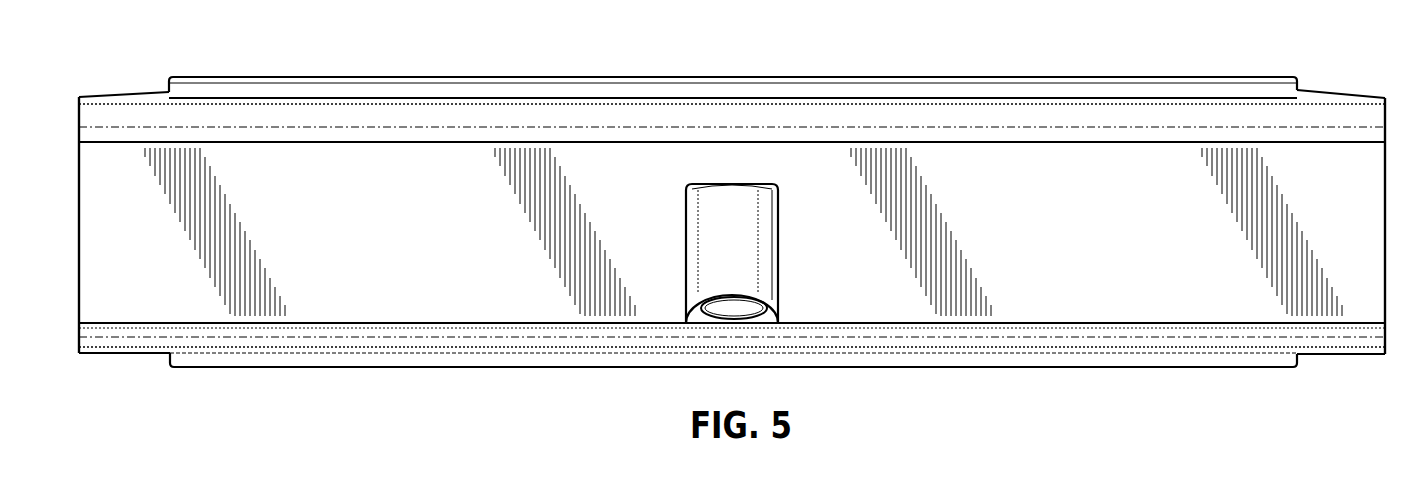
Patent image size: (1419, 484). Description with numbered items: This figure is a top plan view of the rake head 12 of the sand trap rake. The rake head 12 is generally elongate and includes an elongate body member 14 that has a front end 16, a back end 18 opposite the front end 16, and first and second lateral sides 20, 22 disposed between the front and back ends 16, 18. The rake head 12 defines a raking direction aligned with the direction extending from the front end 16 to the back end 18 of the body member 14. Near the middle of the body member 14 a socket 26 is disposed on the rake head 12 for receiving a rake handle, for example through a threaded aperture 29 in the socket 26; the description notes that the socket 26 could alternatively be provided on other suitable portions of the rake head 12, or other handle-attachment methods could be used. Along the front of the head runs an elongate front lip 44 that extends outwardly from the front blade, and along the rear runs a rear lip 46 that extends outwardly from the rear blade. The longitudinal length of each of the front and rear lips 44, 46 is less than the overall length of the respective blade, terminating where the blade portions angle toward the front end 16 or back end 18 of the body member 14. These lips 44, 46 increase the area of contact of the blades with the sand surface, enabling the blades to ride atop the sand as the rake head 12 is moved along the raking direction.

The rake head 12 is at (537, 61).
The body member 14 is at (313, 160).
The front end 16 is at (458, 142).
The back end 18 is at (380, 323).
The first lateral side 20 is at (1385, 168).
The second lateral side 22 is at (79, 175).
The socket 26 is at (748, 270).
The threaded aperture 29 is at (733, 308).
The front lip 44 is at (1085, 82).
The rear lip 46 is at (1052, 367).